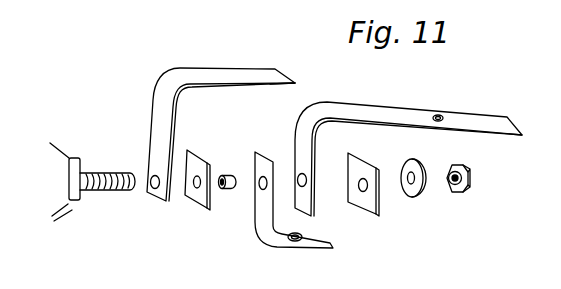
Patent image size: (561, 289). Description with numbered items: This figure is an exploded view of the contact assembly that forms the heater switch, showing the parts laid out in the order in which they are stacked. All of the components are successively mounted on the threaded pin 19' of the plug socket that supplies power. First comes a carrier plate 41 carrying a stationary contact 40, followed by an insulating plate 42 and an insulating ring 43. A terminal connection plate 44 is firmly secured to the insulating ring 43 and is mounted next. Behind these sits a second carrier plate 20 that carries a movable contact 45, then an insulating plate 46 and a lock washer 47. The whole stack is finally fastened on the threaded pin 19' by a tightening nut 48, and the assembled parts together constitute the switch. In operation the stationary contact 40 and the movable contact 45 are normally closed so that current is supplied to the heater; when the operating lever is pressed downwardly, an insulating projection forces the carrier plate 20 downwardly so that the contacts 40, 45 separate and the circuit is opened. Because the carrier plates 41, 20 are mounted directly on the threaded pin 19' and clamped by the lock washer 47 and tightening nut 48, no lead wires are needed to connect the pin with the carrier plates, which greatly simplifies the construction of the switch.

The threaded pin 19' is at (92, 188).
The carrier plate 20 is at (340, 105).
The stationary contact 40 is at (273, 88).
The carrier plate 41 is at (192, 75).
The insulating plate 42 is at (193, 197).
The insulating ring 43 is at (230, 190).
The terminal connection plate 44 is at (298, 242).
The movable contact 45 is at (438, 114).
The insulating plate 46 is at (365, 208).
The lock washer 47 is at (417, 188).
The tightening nut 48 is at (469, 180).